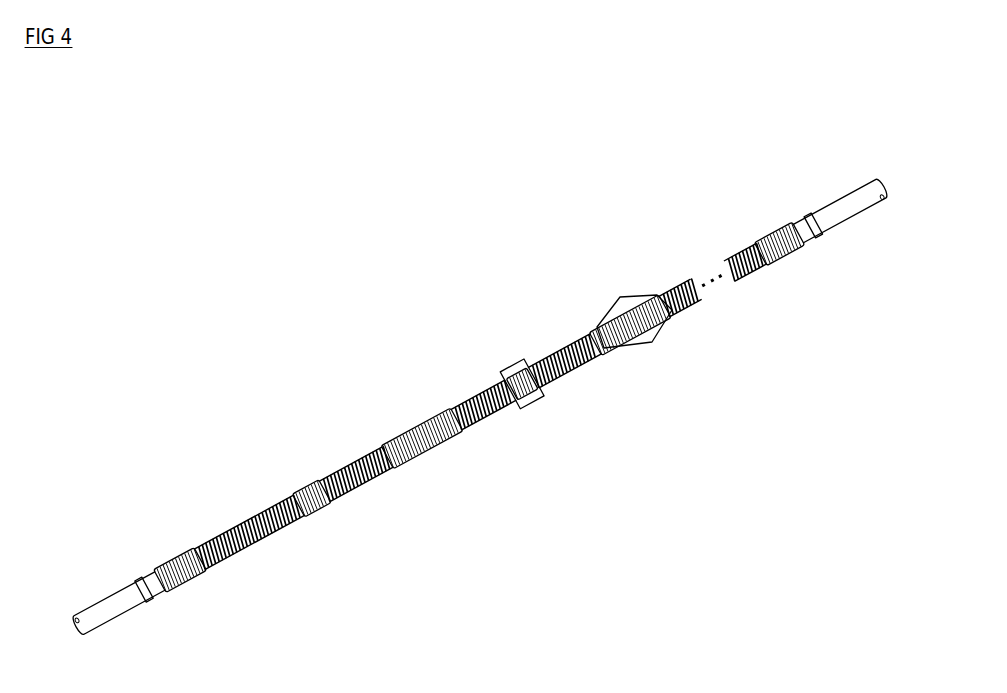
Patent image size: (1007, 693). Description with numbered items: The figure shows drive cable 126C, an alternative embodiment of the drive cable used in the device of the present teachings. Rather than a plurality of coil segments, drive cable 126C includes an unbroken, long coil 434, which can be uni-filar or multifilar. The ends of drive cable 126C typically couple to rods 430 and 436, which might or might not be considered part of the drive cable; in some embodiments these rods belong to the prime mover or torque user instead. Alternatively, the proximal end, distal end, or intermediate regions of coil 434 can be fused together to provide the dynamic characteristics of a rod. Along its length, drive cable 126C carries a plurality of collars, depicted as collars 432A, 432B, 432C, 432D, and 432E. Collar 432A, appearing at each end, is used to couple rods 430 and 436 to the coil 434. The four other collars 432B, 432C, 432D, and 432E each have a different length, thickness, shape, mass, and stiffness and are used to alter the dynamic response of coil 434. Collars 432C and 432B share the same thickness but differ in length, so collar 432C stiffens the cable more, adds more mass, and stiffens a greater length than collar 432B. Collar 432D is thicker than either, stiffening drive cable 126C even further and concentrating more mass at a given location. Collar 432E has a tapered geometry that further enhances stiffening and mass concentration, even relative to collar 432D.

The drive cable 126C is at (238, 312).
The rod 430 is at (95, 612).
The collar 432A is at (157, 567).
The collar 432B is at (308, 488).
The collar 432C is at (410, 418).
The collar 432D is at (513, 355).
The collar 432E is at (612, 292).
The coil 434 is at (216, 520).
The rod 436 is at (855, 197).